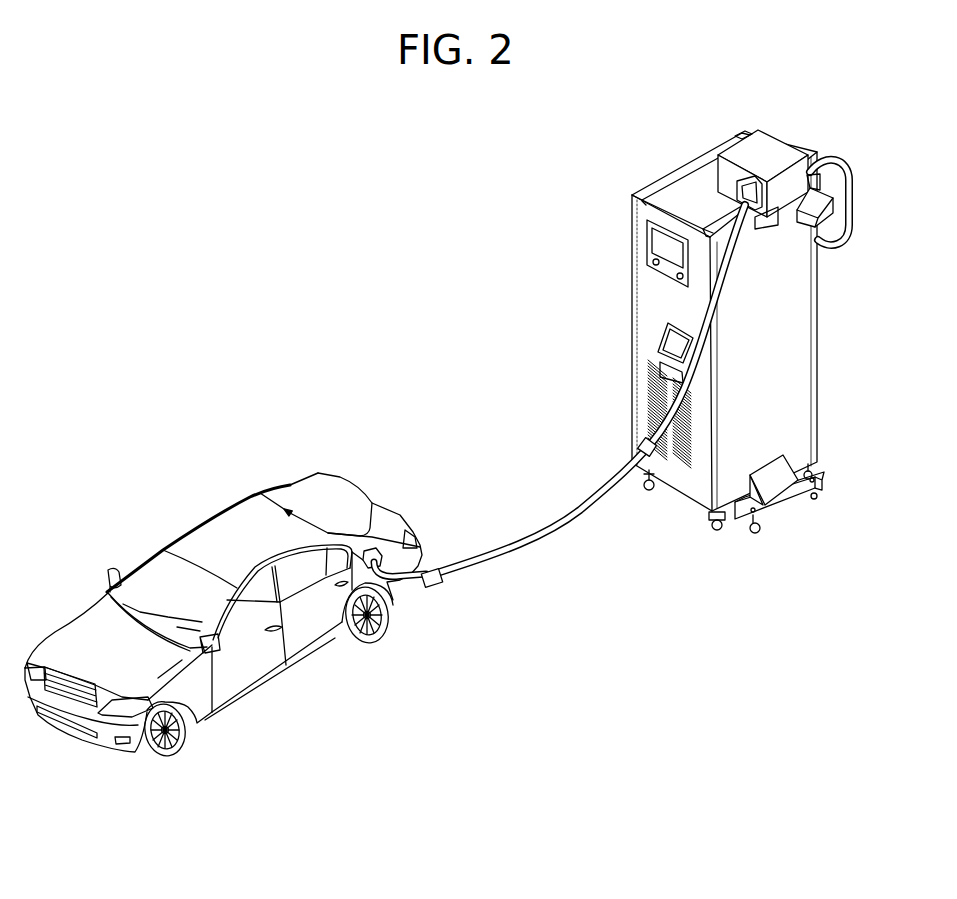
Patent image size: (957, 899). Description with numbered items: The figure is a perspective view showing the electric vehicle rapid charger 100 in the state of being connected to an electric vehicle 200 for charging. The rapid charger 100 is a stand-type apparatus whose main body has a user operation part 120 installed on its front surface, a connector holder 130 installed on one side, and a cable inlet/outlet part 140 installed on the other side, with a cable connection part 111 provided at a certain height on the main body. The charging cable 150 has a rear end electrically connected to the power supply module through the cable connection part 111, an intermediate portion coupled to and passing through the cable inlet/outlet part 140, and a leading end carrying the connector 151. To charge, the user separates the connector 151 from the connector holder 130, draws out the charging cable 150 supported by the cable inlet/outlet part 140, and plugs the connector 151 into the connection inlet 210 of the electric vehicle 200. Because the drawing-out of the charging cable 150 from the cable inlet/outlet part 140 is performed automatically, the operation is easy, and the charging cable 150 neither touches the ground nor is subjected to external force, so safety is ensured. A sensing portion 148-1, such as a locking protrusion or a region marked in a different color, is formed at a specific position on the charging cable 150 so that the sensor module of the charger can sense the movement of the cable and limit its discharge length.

The electric vehicle rapid charger 100 is at (673, 158).
The cable connection part 111 is at (818, 200).
The user operation part 120 is at (646, 228).
The connector holder 130 is at (667, 348).
The cable inlet/outlet part 140 is at (768, 148).
The sensing portion 148-1 is at (645, 448).
The charging cable 150 is at (545, 537).
The connector 151 is at (427, 585).
The electric vehicle 200 is at (195, 517).
The connection inlet 210 is at (374, 532).